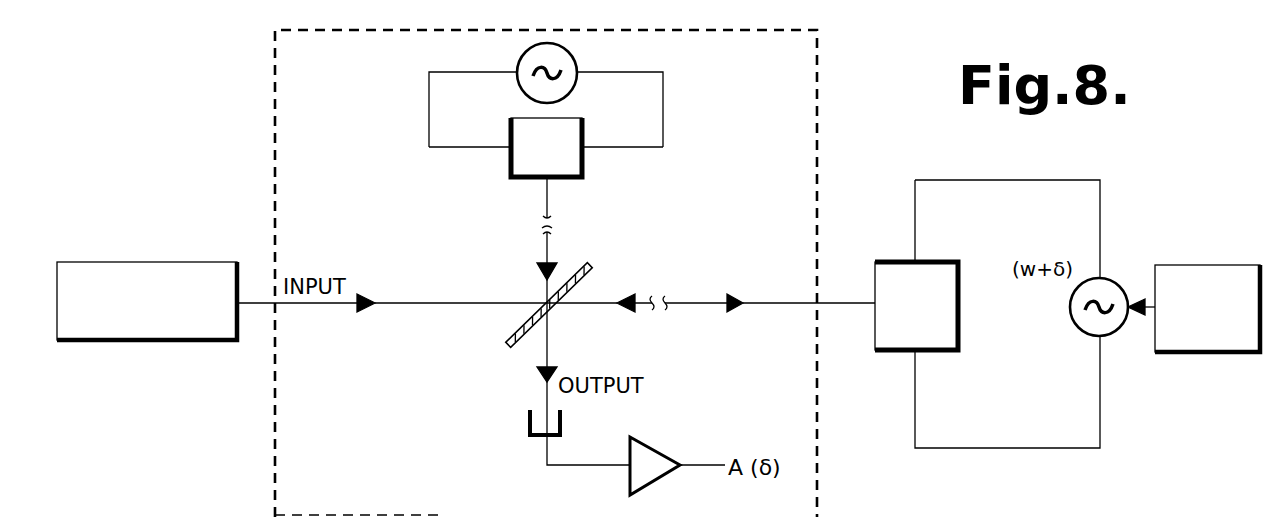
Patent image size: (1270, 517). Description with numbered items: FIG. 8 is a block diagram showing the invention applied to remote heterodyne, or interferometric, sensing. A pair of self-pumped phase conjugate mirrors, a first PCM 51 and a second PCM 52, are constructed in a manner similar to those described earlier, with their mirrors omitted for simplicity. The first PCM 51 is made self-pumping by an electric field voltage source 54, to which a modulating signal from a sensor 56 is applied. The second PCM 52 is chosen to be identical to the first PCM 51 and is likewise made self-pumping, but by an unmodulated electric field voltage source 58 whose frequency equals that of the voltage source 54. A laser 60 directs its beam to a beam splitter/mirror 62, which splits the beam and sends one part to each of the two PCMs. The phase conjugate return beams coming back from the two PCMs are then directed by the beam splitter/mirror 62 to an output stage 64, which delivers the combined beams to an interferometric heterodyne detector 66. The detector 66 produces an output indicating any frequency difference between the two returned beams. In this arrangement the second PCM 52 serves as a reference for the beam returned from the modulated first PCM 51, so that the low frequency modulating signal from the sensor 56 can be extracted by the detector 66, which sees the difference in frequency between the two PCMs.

The first PCM 51 is at (858, 278).
The second PCM 52 is at (590, 184).
The electric field voltage source 54 is at (1074, 324).
The sensor 56 is at (1213, 352).
The unmodulated electric field voltage source 58 is at (577, 49).
The laser 60 is at (173, 342).
The beam splitter/mirror 62 is at (464, 305).
The output stage 64 is at (530, 420).
The interferometric (heterodyne) detector 66 is at (655, 448).